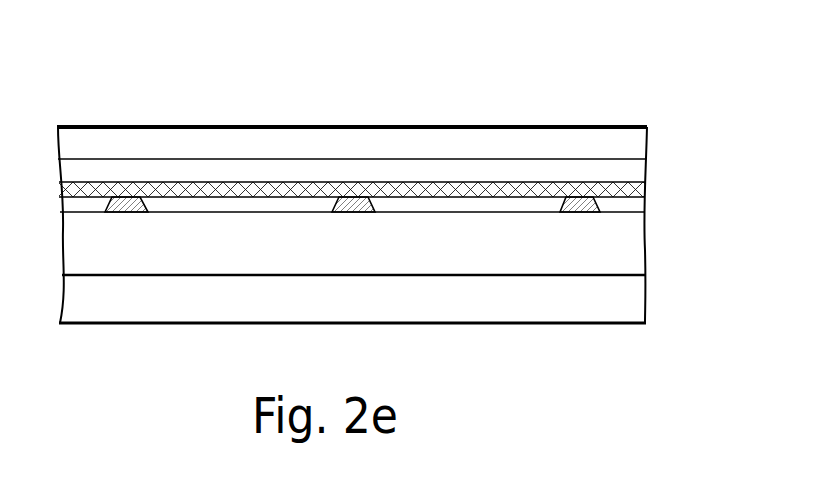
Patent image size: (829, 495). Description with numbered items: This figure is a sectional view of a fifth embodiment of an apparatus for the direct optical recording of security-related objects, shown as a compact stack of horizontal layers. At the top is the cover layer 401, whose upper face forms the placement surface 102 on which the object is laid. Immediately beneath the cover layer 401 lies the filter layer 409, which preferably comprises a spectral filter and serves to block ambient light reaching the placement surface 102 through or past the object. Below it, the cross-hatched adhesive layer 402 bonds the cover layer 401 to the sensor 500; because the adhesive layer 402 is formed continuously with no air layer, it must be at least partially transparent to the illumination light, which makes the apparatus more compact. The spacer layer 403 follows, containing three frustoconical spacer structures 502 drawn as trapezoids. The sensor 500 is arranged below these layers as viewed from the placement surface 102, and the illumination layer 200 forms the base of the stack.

The placement surface 102 is at (633, 127).
The cover layer 401 is at (618, 148).
The filter layer 409 is at (618, 172).
The adhesive layer 402 is at (618, 193).
The spacer layer 403 is at (618, 205).
The spacer structure 502 is at (360, 205).
The sensor 500 is at (618, 243).
The illumination layer 200 is at (618, 298).